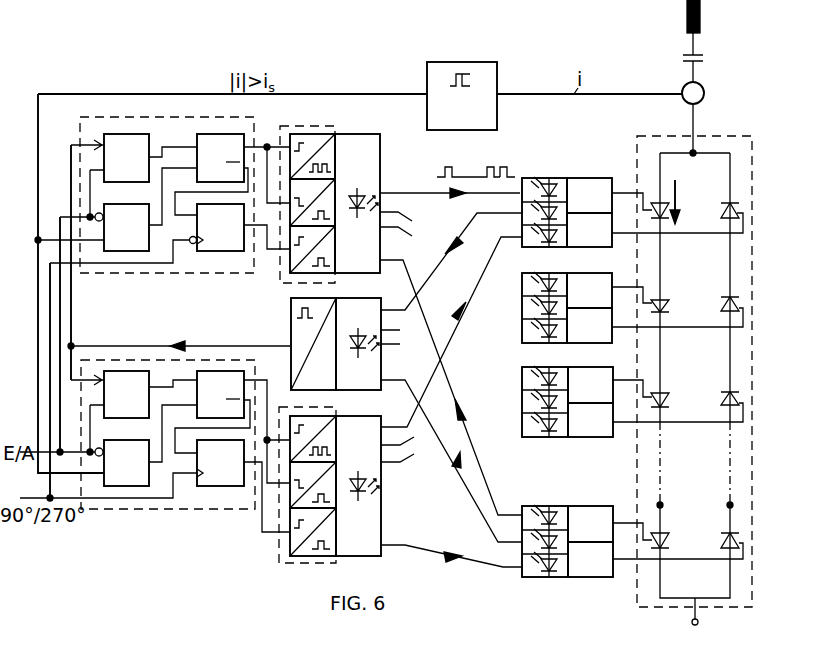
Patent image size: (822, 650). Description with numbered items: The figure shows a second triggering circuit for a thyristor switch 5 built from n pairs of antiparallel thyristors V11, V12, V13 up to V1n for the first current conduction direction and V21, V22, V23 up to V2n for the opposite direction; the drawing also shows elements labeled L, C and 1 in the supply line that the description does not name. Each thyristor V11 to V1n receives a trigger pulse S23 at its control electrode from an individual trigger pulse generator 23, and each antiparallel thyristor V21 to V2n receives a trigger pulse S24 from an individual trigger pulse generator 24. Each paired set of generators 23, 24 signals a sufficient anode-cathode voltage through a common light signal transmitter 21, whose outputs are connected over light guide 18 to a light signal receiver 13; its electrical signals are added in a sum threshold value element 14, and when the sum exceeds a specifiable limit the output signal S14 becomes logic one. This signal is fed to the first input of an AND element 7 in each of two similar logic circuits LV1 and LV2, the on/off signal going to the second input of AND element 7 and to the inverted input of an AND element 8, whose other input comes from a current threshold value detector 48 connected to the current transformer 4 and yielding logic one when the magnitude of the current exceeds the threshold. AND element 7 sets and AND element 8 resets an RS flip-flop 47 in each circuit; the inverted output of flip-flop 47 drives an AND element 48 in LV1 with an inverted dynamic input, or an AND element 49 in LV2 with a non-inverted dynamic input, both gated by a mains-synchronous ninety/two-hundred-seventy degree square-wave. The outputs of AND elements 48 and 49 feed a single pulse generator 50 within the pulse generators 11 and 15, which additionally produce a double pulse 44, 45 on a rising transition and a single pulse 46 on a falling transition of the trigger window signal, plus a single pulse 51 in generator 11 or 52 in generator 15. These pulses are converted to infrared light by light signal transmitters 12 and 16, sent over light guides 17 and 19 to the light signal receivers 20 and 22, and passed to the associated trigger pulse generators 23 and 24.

The terminal 1 is at (698, 622).
The current transformer 4 is at (705, 93).
The thyristor switch 5 is at (694, 361).
The AND element 7 is at (106, 135).
The AND element 8 is at (149, 243).
The pulse generator 11 is at (302, 126).
The light signal transmitter 12 is at (355, 134).
The light signal receiver 13 is at (373, 299).
The sum threshold value element 14 is at (291, 338).
The pulse generator 15 is at (337, 416).
The light signal transmitter 16 is at (351, 557).
The light guide 17 is at (410, 192).
The light guide 18 is at (460, 228).
The light guide 19 is at (478, 291).
The light signal receiver 20 is at (553, 178).
The light signal transmitter 21 is at (559, 210).
The light signal receiver 22 is at (563, 240).
The trigger pulse generator 23 is at (590, 360).
The trigger pulse generator 24 is at (590, 395).
The double pulse 44 is at (503, 167).
The double pulse 45 is at (487, 167).
The single pulse 46 is at (446, 168).
The RS flip-flop 47 is at (198, 140).
The AND element 48 is at (226, 252).
The AND element 49 is at (227, 487).
The single pulse generator 50 is at (286, 260).
The single pulse 51 is at (312, 268).
The single pulse 52 is at (320, 549).
The inductor L is at (700, 12).
The capacitor C is at (705, 60).
The output signal S14 is at (224, 346).
The trigger pulse S23 is at (623, 192).
The trigger pulse S24 is at (620, 236).
The first logic circuit LV1 is at (131, 117).
The second logic circuit LV2 is at (98, 511).
The thyristor V11 is at (675, 190).
The thyristor V21 is at (724, 200).
The thyristor V12 is at (665, 299).
The thyristor V22 is at (725, 297).
The thyristor V13 is at (665, 392).
The thyristor V23 is at (725, 391).
The thyristor V1n is at (675, 530).
The thyristor V2n is at (719, 530).